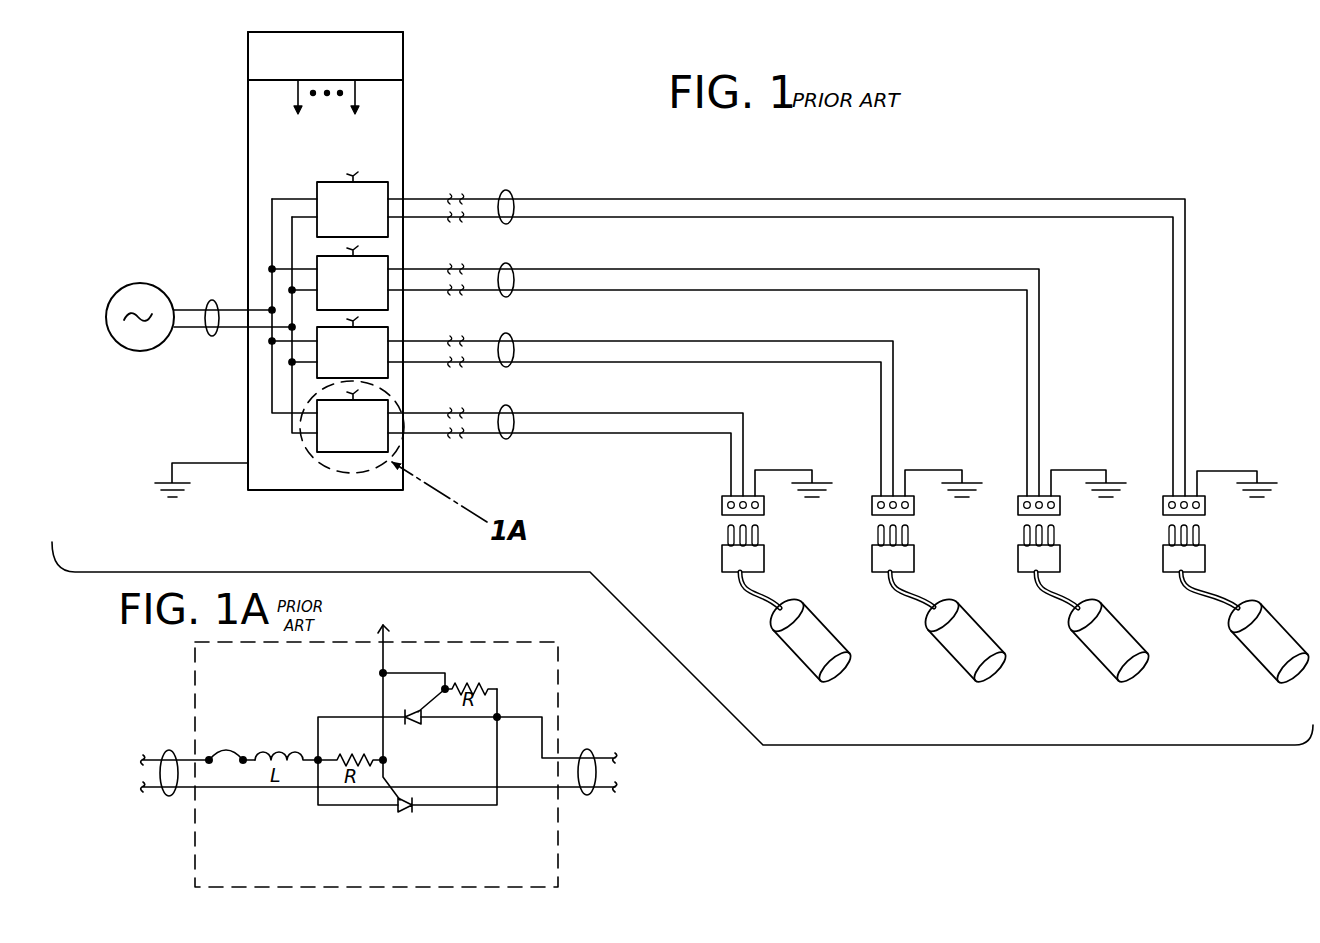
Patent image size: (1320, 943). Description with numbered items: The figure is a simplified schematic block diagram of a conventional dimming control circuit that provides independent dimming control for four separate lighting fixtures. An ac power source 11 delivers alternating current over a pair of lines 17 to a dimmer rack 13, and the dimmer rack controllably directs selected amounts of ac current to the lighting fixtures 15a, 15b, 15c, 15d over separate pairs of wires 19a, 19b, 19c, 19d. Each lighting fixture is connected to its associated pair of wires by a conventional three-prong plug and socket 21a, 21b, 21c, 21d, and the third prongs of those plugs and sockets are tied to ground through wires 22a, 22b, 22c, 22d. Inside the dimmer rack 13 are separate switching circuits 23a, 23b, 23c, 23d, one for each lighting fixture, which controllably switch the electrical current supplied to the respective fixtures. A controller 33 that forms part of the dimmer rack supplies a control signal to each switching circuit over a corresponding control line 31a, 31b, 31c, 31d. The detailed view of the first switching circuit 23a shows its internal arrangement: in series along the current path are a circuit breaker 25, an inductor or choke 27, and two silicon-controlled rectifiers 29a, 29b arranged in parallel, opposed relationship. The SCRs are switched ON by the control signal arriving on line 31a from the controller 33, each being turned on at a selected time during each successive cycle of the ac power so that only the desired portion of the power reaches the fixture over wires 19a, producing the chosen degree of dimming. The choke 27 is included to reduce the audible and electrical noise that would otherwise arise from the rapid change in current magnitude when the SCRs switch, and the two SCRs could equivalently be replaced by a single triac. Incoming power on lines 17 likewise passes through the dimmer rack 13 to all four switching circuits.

In FIG. 1, the ac power source 11 is at (128, 283).
In FIG. 1, the dimmer rack 13 is at (403, 110).
In FIG. 1, the lighting fixture 15a is at (809, 670).
In FIG. 1, the lighting fixture 15b is at (966, 664).
In FIG. 1, the lighting fixture 15c is at (1114, 668).
In FIG. 1, the lighting fixture 15d is at (1266, 668).
In FIG. 1, the pair of lines 17 is at (212, 300).
In FIG. 1A, the pair of lines 17 is at (168, 796).
In FIG. 1, the pair of wires 19a is at (507, 439).
In FIG. 1A, the pair of wires 19a is at (588, 795).
In FIG. 1, the pair of wires 19b is at (507, 367).
In FIG. 1, the pair of wires 19c is at (507, 297).
In FIG. 1, the pair of wires 19d is at (507, 224).
In FIG. 1, the three-prong plug and socket 21a is at (703, 528).
In FIG. 1, the three-prong plug and socket 21b is at (858, 532).
In FIG. 1, the three-prong plug and socket 21c is at (1000, 532).
In FIG. 1, the three-prong plug and socket 21d is at (1152, 533).
In FIG. 1, the ground wire 22a is at (785, 470).
In FIG. 1, the ground wire 22b is at (935, 470).
In FIG. 1, the ground wire 22c is at (1080, 470).
In FIG. 1, the ground wire 22d is at (1227, 471).
In FIG. 1, the switching circuit 23a is at (389, 408).
In FIG. 1A, the switching circuit 23a is at (558, 873).
In FIG. 1, the switching circuit 23b is at (389, 335).
In FIG. 1, the switching circuit 23c is at (389, 264).
In FIG. 1, the switching circuit 23d is at (389, 190).
In FIG. 1A, the circuit breaker 25 is at (224, 746).
In FIG. 1A, the inductor or choke 27 is at (283, 746).
In FIG. 1A, the silicon-controlled rectifier 29a is at (412, 724).
In FIG. 1A, the silicon-controlled rectifier 29b is at (404, 808).
In FIG. 1, the control signal line 31a is at (353, 394).
In FIG. 1A, the control signal line 31a is at (385, 630).
In FIG. 1, the control input 31b is at (353, 321).
In FIG. 1, the control input 31c is at (353, 250).
In FIG. 1, the control input 31d is at (353, 176).
In FIG. 1, the controller 33 is at (403, 70).